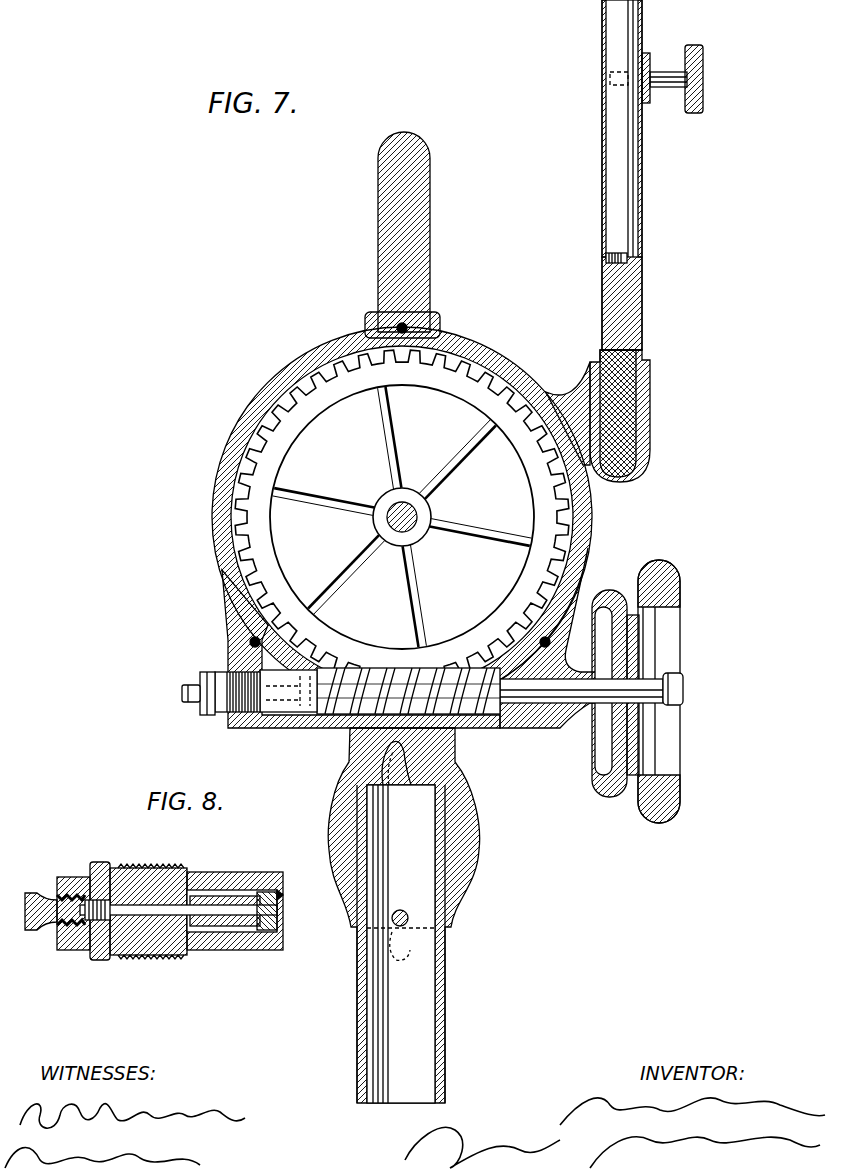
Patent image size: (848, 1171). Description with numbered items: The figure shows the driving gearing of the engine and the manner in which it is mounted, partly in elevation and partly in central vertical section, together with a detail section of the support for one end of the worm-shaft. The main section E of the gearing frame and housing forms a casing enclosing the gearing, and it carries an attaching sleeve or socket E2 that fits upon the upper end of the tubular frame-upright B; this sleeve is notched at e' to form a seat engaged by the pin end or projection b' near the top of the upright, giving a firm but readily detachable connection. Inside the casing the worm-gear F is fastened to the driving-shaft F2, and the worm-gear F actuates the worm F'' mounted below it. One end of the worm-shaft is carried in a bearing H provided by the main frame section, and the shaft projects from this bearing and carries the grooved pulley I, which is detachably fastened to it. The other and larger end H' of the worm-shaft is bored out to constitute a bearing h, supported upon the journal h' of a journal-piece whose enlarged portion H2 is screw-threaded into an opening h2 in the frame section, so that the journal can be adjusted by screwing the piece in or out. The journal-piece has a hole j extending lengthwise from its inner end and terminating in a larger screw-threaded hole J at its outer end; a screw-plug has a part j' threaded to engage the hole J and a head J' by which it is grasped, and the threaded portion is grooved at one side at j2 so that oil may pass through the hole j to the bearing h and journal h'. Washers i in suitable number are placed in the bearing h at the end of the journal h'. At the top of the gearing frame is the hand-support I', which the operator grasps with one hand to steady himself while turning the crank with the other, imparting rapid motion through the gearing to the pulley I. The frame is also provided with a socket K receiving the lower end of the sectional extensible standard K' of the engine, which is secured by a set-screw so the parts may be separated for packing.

In FIG. 7, the main section of the gearing frame and housing E is at (232, 452).
In FIG. 7, the worm-gear F is at (402, 517).
In FIG. 7, the driving-shaft F2 is at (412, 517).
In FIG. 7, the hand-support I' is at (408, 235).
In FIG. 7, the socket K is at (634, 416).
In FIG. 7, the sectional extensible standard K' is at (652, 175).
In FIG. 7, the grooved pulley I is at (645, 691).
In FIG. 7, the bearing H is at (591, 718).
In FIG. 7, the worm F'' is at (400, 724).
In FIG. 7, the larger end of the worm-shaft H' is at (288, 718).
In FIG. 8, the larger end of the worm-shaft H' is at (235, 895).
In FIG. 7, the enlarged portion of the journal-piece H2 is at (232, 690).
In FIG. 8, the enlarged portion of the journal-piece H2 is at (143, 948).
In FIG. 7, the opening h2 is at (236, 720).
In FIG. 7, the head of the screw-plug J' is at (172, 708).
In FIG. 8, the head of the screw-plug J' is at (37, 929).
In FIG. 7, the attaching sleeve or socket E2 is at (474, 852).
In FIG. 7, the frame-upright B is at (440, 1006).
In FIG. 7, the pin end or projection b' is at (401, 901).
In FIG. 7, the notch e' is at (401, 948).
In FIG. 8, the screw-threaded hole J is at (74, 925).
In FIG. 8, the journal h' is at (221, 944).
In FIG. 8, the bearing h is at (178, 950).
In FIG. 8, the hole j is at (262, 938).
In FIG. 8, the washers i is at (283, 895).
In FIG. 8, the groove j2 is at (75, 893).
In FIG. 8, the threaded part of the screw-plug j' is at (97, 949).